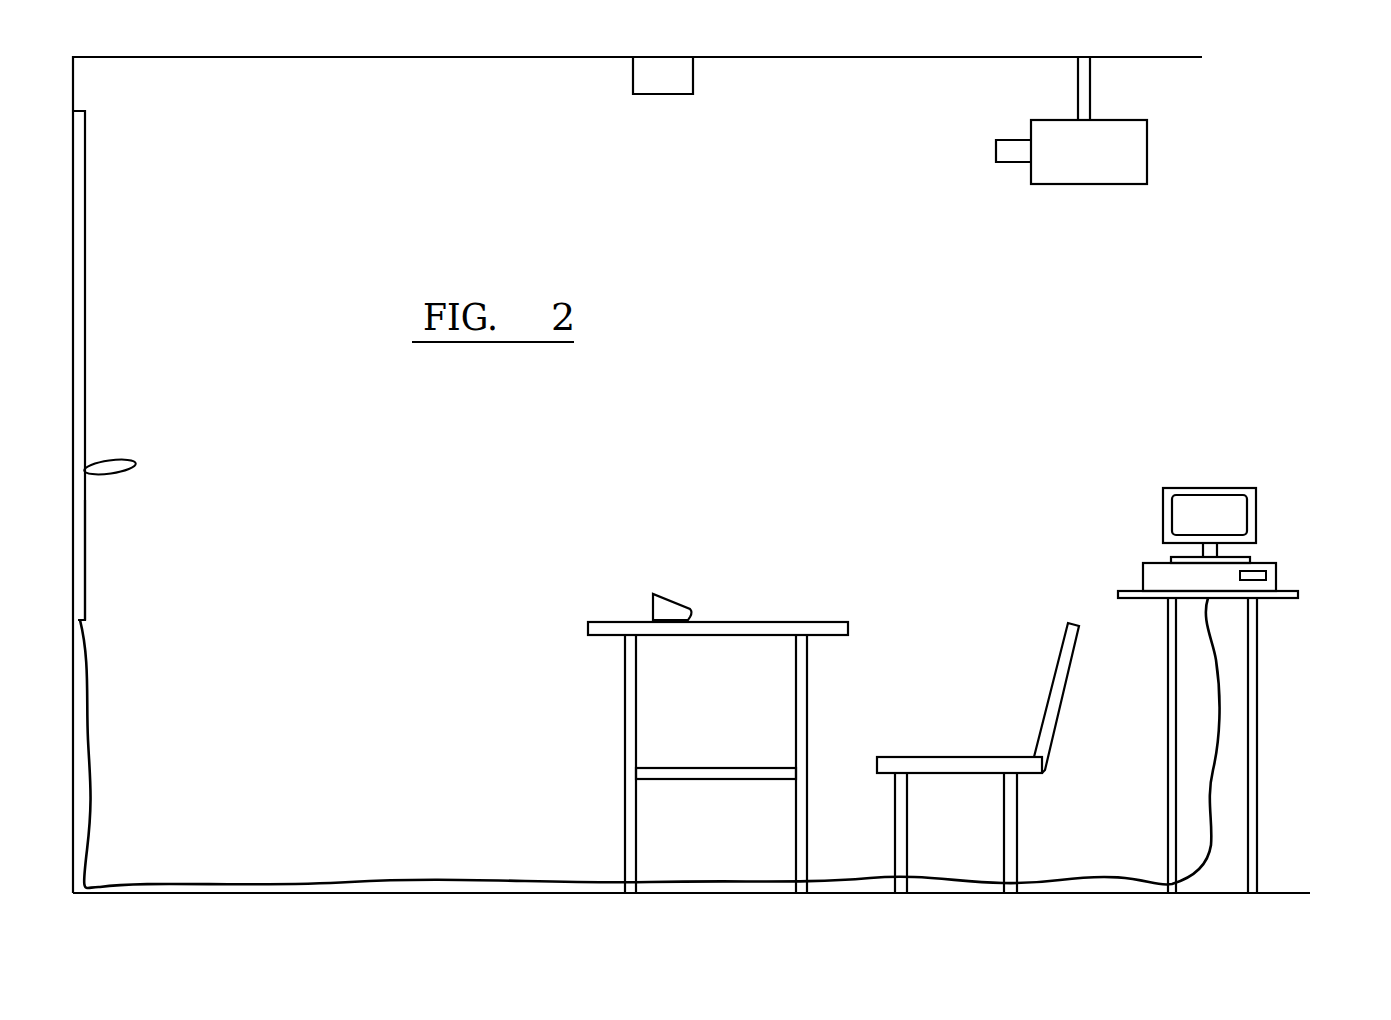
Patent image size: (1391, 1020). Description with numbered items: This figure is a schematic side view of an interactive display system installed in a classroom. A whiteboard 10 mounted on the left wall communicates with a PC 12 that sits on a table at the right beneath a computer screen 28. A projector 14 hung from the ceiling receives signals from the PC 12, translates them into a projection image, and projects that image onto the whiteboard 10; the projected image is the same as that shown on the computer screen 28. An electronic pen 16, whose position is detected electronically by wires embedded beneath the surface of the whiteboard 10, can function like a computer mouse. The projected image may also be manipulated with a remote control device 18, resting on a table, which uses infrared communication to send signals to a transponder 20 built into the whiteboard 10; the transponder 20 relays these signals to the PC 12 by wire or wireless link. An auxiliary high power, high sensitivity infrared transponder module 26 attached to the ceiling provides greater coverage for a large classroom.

The whiteboard 10 is at (87, 585).
The PC 12 is at (1267, 562).
The projector 14 is at (1103, 153).
The electronic pen 16 is at (124, 470).
The remote control device 18 is at (668, 605).
The transponder 20 is at (87, 181).
The infrared transponder module 26 is at (660, 77).
The computer screen 28 is at (1220, 500).